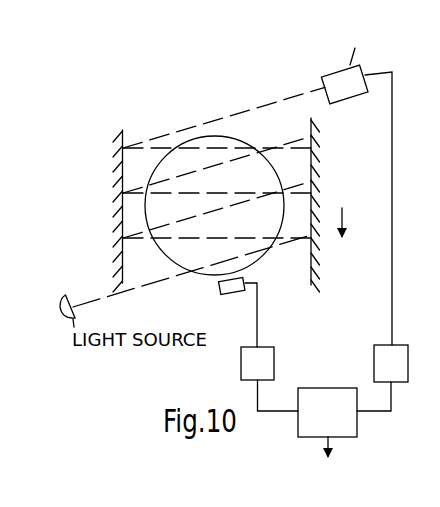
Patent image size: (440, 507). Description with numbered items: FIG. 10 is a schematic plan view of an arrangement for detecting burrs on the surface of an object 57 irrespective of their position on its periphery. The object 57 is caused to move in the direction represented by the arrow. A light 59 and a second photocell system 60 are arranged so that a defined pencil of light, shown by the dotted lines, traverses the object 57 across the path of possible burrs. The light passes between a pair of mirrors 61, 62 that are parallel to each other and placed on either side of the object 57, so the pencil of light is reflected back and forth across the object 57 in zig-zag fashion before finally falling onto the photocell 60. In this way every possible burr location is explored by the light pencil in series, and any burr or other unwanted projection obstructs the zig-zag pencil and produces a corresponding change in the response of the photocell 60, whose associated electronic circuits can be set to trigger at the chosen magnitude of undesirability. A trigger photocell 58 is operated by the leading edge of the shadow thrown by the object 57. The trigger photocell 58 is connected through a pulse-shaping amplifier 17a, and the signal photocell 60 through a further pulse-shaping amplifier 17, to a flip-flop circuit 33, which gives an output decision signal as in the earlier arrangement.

The object 57 is at (243, 143).
The trigger photocell 58 is at (219, 285).
The light 59 is at (64, 293).
The second photocell system 60 is at (323, 80).
The mirror 61 is at (316, 192).
The mirror 62 is at (122, 193).
The pulse-shaping amplifier 17a is at (274, 358).
The pulse shaping circuit 17 is at (408, 360).
The flip-flop circuit 33 is at (357, 430).